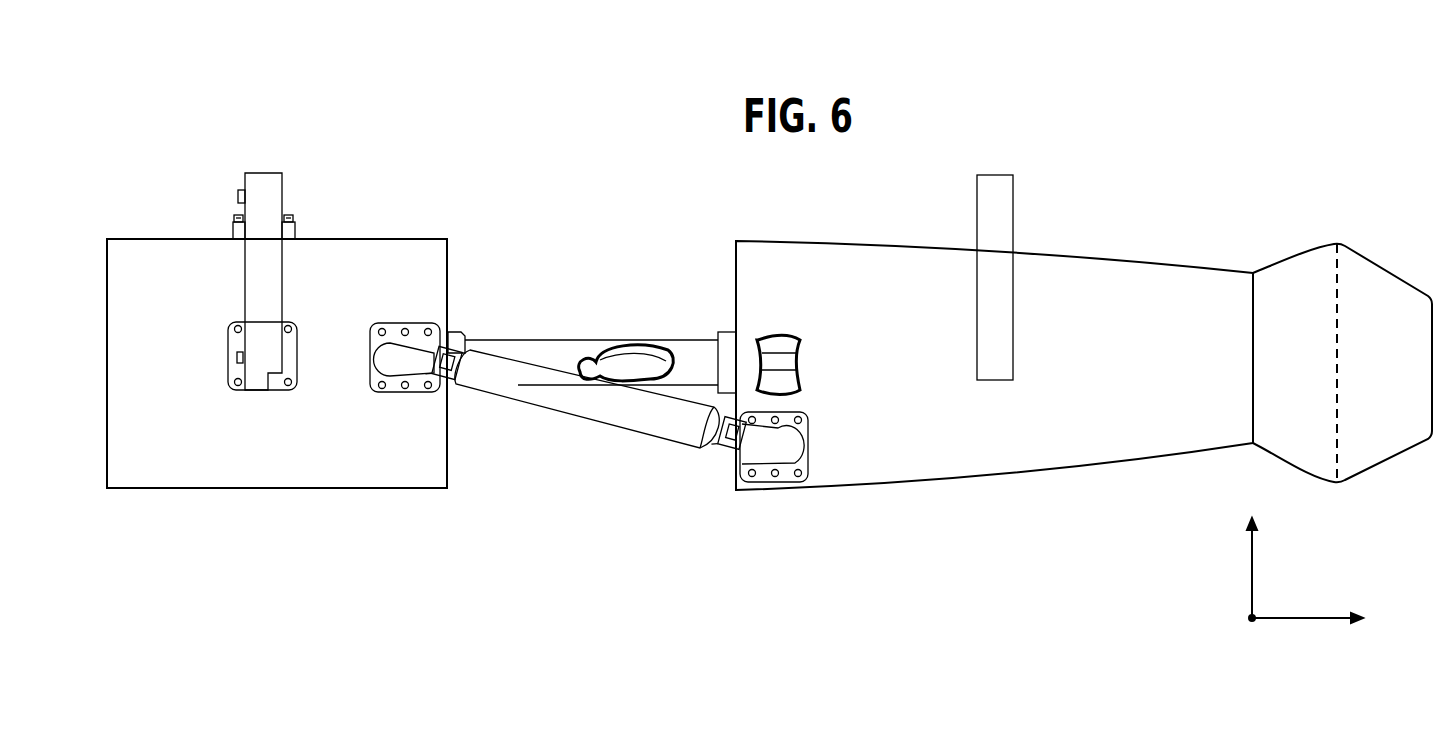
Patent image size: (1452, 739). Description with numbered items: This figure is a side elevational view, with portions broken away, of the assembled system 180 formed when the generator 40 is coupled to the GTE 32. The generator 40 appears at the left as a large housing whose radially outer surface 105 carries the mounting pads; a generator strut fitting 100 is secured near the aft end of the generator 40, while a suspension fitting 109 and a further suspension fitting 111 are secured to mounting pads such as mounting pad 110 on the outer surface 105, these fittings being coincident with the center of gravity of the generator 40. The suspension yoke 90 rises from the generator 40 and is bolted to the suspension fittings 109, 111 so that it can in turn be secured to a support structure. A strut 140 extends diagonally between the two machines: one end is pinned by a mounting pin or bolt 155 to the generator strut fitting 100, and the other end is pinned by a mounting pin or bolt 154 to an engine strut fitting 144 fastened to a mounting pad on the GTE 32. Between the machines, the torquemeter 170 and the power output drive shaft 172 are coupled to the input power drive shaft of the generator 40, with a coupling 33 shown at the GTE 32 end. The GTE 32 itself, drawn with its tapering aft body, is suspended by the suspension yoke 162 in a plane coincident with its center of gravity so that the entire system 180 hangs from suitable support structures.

The GTE 32 is at (877, 299).
The keyed coupling 33 is at (779, 357).
The generator 40 is at (257, 371).
The suspension yoke 90 is at (268, 186).
The generator strut fitting 100 is at (398, 365).
The radially outer surface 105 is at (290, 448).
The suspension fitting 109 is at (237, 358).
The mounting pad 110 is at (233, 235).
The suspension fitting 111 is at (295, 226).
The strut 140 is at (580, 407).
The engine strut fitting 144 is at (803, 462).
The mounting pin or bolt 154 is at (717, 417).
The mounting pin or bolt 155 is at (450, 332).
The suspension yoke 162 is at (977, 245).
The torquemeter 170 is at (527, 340).
The power output drive shaft 172 is at (657, 350).
The system 180 is at (1171, 141).